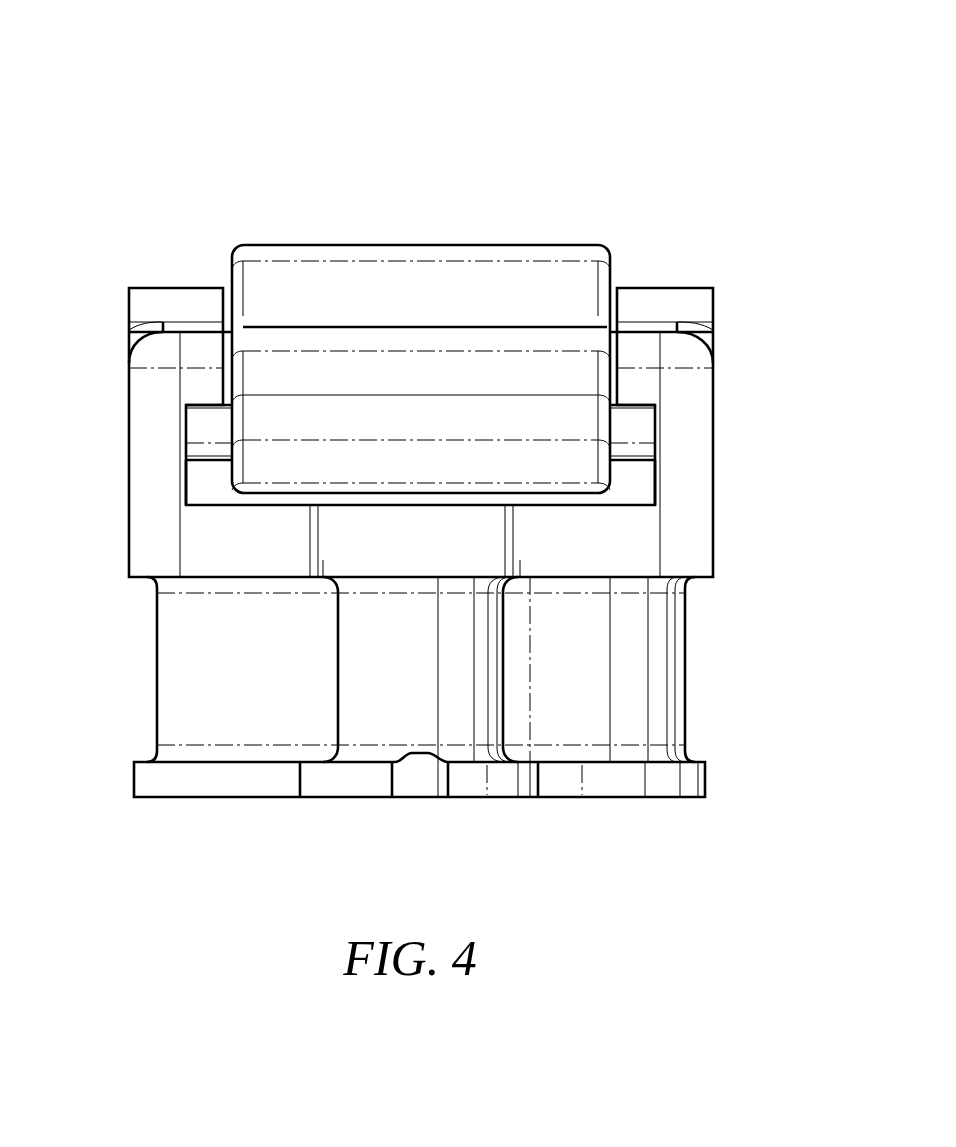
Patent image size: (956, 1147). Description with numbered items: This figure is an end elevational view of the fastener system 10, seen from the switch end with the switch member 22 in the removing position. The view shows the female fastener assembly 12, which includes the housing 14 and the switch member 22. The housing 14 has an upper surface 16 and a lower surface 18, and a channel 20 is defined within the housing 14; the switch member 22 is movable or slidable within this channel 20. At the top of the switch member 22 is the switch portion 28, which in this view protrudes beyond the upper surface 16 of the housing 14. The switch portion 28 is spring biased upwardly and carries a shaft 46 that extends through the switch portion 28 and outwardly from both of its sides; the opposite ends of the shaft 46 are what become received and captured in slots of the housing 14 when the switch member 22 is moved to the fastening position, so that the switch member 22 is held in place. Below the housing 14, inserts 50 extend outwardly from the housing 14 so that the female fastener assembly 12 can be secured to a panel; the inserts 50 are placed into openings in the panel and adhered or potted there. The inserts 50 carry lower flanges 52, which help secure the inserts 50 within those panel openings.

The fastener system 10 is at (492, 162).
The female fastener assembly 12 is at (742, 272).
The housing 14 is at (687, 445).
The upper surface 16 is at (180, 367).
The lower surface 18 is at (202, 540).
The channel 20 is at (645, 485).
The switch member 22 is at (422, 263).
The switch portion 28 is at (523, 243).
The shaft 46 is at (200, 427).
The inserts 50 is at (658, 713).
The lower flanges 52 is at (692, 778).